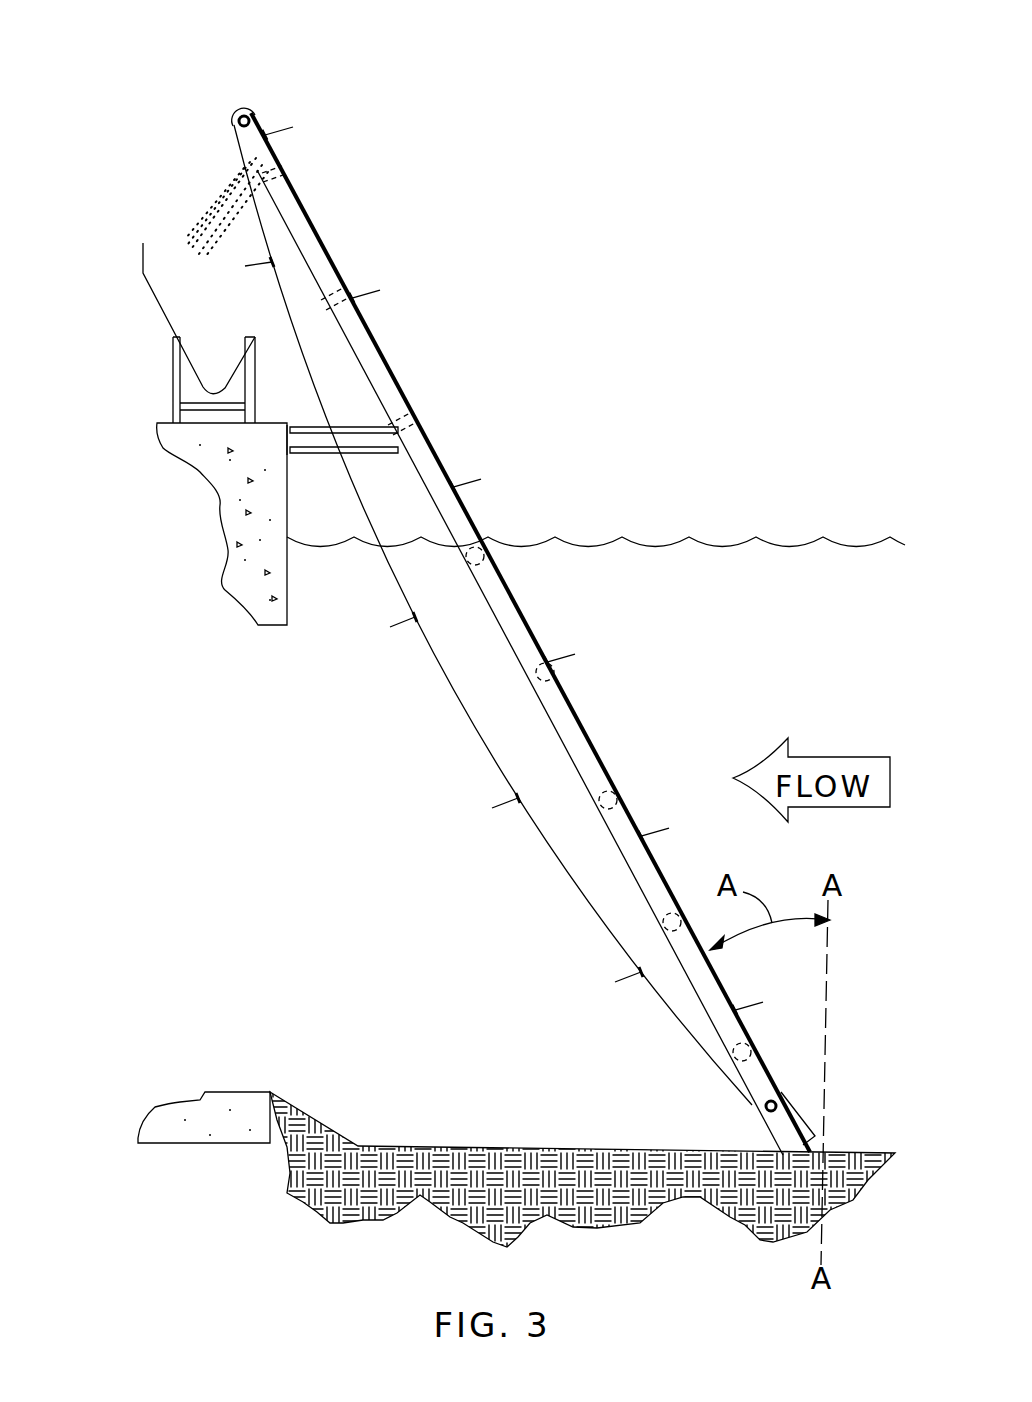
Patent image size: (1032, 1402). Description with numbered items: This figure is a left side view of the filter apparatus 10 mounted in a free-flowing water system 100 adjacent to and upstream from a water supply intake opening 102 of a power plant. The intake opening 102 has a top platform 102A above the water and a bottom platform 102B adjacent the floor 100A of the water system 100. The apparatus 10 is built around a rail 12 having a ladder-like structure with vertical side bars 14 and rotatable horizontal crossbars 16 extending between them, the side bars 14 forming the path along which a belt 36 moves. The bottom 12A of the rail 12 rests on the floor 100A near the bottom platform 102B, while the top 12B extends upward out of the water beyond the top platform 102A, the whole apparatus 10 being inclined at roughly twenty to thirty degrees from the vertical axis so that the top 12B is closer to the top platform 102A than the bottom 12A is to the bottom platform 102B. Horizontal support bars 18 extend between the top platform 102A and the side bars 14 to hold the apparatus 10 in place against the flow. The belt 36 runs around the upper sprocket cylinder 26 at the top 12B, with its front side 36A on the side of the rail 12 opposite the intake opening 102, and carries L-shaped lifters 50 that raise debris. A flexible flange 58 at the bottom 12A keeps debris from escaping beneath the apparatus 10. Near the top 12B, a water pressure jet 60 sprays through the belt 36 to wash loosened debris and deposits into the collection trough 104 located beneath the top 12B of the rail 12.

The filter apparatus 10 is at (477, 335).
The rail 12 is at (315, 256).
The bottom of the rail 12A is at (760, 1078).
The top of the rail 12B is at (247, 140).
The side bars 14 is at (523, 645).
The crossbars 16 is at (548, 676).
The support bars 18 is at (392, 443).
The upper sprocket cylinder 26 is at (247, 108).
The belt 36 is at (490, 753).
The front side of the belt 36A is at (477, 523).
The lifter 50 is at (370, 313).
The flange 58 is at (800, 1110).
The water pressure jet 60 is at (278, 149).
The water system 100 is at (858, 692).
The floor of the water system 100A is at (505, 1148).
The water supply intake opening 102 is at (218, 870).
The top platform 102A is at (275, 628).
The bottom platform 102B is at (232, 1095).
The collection trough 104 is at (190, 297).